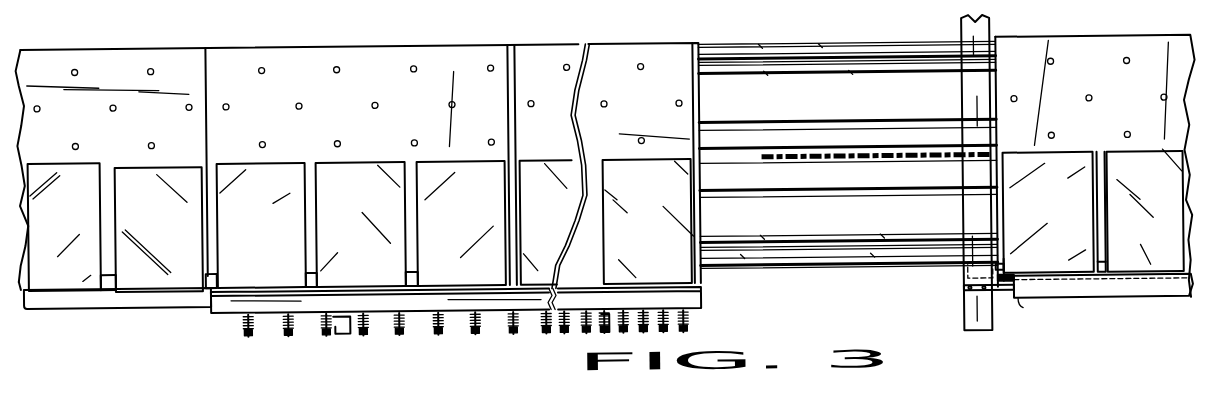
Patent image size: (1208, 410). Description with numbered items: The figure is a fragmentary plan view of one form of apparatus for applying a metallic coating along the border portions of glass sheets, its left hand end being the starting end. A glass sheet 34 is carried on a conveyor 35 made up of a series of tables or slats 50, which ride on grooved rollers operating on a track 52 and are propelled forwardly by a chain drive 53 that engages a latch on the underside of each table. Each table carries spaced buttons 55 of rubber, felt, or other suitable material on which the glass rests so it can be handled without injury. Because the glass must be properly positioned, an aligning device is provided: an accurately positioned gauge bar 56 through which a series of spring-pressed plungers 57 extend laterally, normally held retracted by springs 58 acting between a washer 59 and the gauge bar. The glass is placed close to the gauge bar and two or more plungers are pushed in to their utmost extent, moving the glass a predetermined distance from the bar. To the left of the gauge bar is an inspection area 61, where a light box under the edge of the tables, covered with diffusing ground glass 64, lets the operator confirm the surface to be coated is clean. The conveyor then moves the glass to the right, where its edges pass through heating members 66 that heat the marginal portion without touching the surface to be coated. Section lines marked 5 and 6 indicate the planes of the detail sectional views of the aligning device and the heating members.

The tables or slats 50 is at (258, 54).
The spaced buttons 55 is at (376, 100).
The glass sheet 34 is at (240, 162).
The conveyor 35 is at (671, 54).
The track 52 is at (720, 245).
The chain drive 53 is at (870, 152).
The gauge bar 56 is at (423, 313).
The spring-pressed plungers 57 is at (350, 332).
The springs 58 is at (313, 331).
The washer 59 is at (245, 326).
The inspection area 61 is at (90, 310).
The ground glass 64 is at (43, 295).
The heating members 66 is at (1133, 294).
The section line 5- 5 is at (248, 283).
The section line 6- 6 is at (1053, 276).